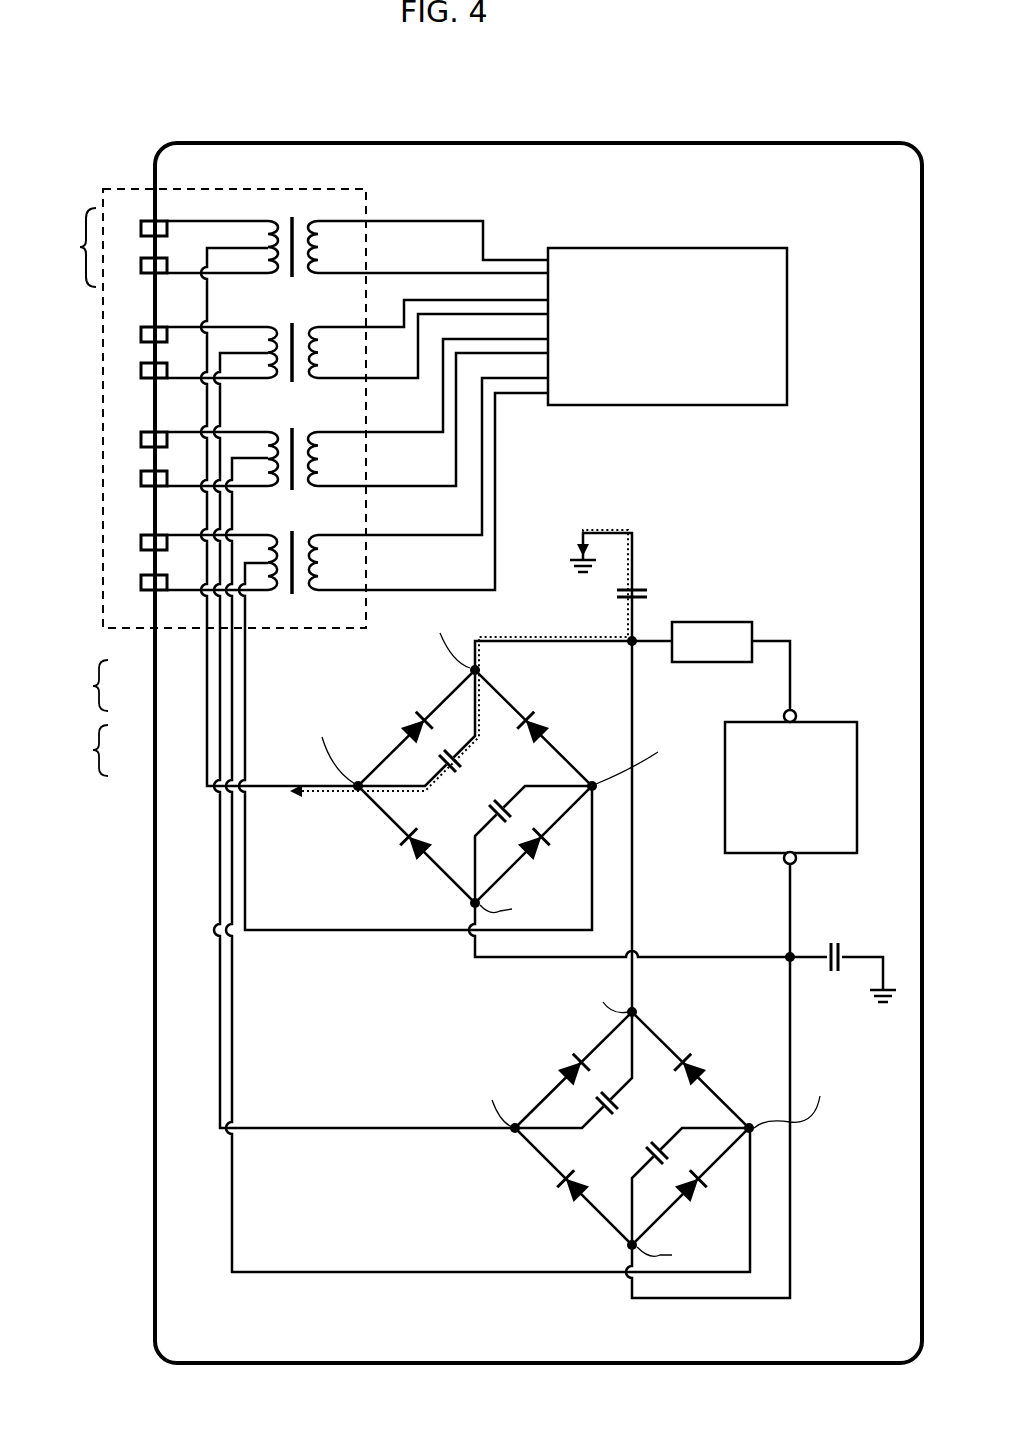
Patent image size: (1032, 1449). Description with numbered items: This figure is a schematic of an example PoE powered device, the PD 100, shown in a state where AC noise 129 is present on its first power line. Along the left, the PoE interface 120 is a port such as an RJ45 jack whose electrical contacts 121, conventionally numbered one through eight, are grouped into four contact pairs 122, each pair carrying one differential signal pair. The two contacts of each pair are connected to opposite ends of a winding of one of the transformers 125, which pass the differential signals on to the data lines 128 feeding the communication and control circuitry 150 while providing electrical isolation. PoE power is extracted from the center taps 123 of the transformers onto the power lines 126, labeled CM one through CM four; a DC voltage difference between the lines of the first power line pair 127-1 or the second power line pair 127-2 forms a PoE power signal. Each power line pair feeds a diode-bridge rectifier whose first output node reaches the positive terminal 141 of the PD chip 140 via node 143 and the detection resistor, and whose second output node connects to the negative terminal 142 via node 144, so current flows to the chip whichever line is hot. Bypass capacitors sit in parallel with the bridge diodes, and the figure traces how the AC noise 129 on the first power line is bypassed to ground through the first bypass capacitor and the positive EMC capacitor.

The PD 100 is at (723, 143).
The PoE interface 120 is at (100, 604).
The electrical contacts 121 is at (147, 222).
The contact pairs 122 is at (67, 247).
The center taps 123 is at (248, 246).
The transformers 125 is at (300, 222).
The power lines 126 is at (243, 648).
The first power line pair 127-1 is at (68, 685).
The second power line pair 127-2 is at (68, 750).
The data lines 128 is at (405, 273).
The AC noise 129 is at (300, 798).
The PD chip 140 is at (847, 720).
The positive terminal 141 is at (784, 714).
The negative terminal 142 is at (784, 862).
The node 143 is at (629, 637).
The node 144 is at (787, 952).
The communication and control circuitry 150 is at (787, 318).